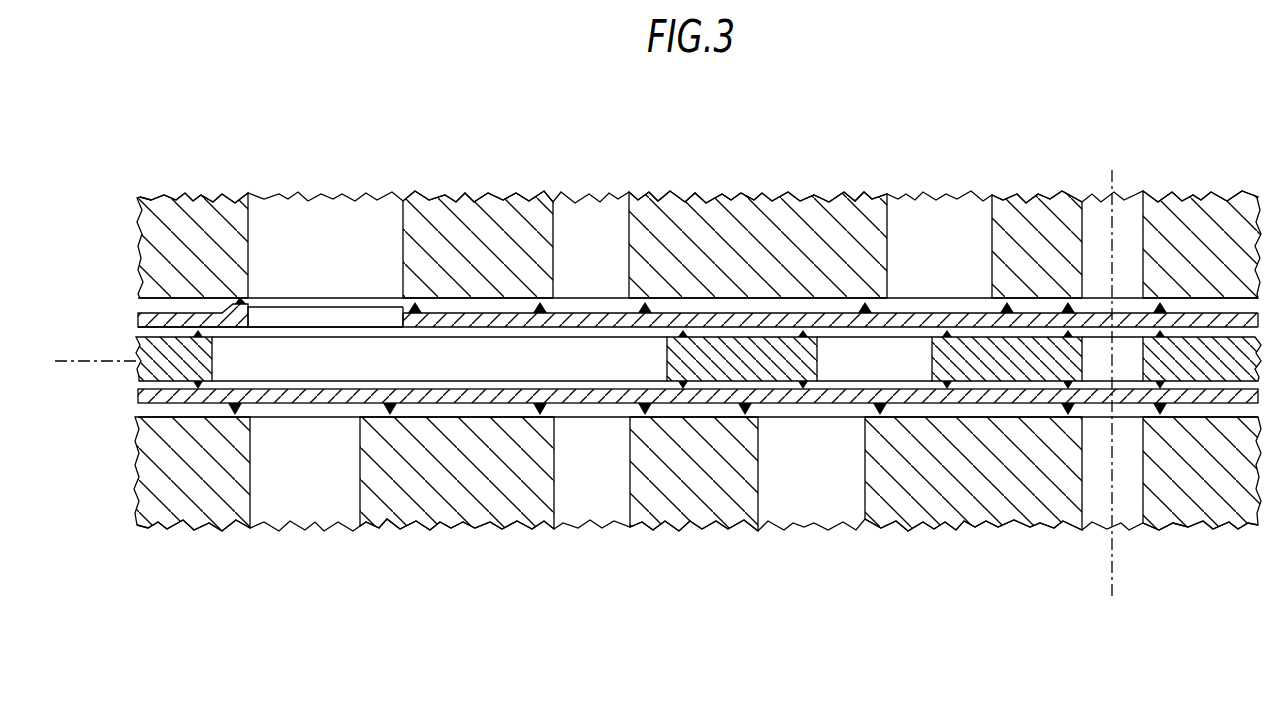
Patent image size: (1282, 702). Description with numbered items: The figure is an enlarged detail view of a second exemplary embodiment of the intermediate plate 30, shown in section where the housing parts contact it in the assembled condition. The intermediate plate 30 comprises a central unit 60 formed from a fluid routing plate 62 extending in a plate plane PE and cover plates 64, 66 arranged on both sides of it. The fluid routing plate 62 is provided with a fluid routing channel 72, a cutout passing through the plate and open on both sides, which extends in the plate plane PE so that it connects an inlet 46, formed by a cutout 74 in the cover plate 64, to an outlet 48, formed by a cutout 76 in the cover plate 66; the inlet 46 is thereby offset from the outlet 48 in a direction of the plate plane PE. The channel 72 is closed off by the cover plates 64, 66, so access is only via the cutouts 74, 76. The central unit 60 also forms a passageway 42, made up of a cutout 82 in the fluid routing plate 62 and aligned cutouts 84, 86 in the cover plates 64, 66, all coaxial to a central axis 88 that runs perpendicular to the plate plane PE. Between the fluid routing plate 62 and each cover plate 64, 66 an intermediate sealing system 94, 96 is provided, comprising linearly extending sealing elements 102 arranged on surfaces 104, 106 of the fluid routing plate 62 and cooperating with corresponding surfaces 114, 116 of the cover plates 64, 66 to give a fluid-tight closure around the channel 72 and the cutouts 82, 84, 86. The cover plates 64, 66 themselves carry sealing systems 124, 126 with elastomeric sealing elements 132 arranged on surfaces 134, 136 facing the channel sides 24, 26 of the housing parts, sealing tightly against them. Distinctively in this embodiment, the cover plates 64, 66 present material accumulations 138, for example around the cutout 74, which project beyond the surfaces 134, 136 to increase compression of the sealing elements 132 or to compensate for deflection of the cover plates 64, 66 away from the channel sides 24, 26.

The intermediate plate 30 is at (797, 168).
The channel side 24 is at (833, 296).
The channel side 26 is at (890, 410).
The passageway 42 is at (1124, 346).
The inlet 46 is at (256, 318).
The outlet 48 is at (603, 397).
The central unit 60 is at (845, 428).
The fluid routing plate 62 is at (797, 330).
The cover plate 64 is at (938, 312).
The cover plate 66 is at (935, 395).
The fluid routing channel 72 is at (473, 362).
The cutout 74 is at (372, 318).
The cutout 76 is at (566, 397).
The cutout 82 is at (1098, 372).
The cutout 84 is at (1100, 323).
The cutout 86 is at (1130, 397).
The central axis 88 is at (1113, 572).
The intermediate sealing system 94 is at (703, 330).
The intermediate sealing system 96 is at (703, 398).
The sealing element 102 is at (680, 325).
The surface 104 is at (777, 357).
The surface 106 is at (776, 398).
The surface 114 is at (650, 343).
The surface 116 is at (657, 398).
The sealing system 124 is at (540, 303).
The sealing system 126 is at (522, 398).
The sealing element 132 is at (237, 298).
The surface 134 is at (443, 312).
The surface 136 is at (326, 408).
The material accumulation 138 is at (232, 297).
The plate plane PE is at (90, 358).